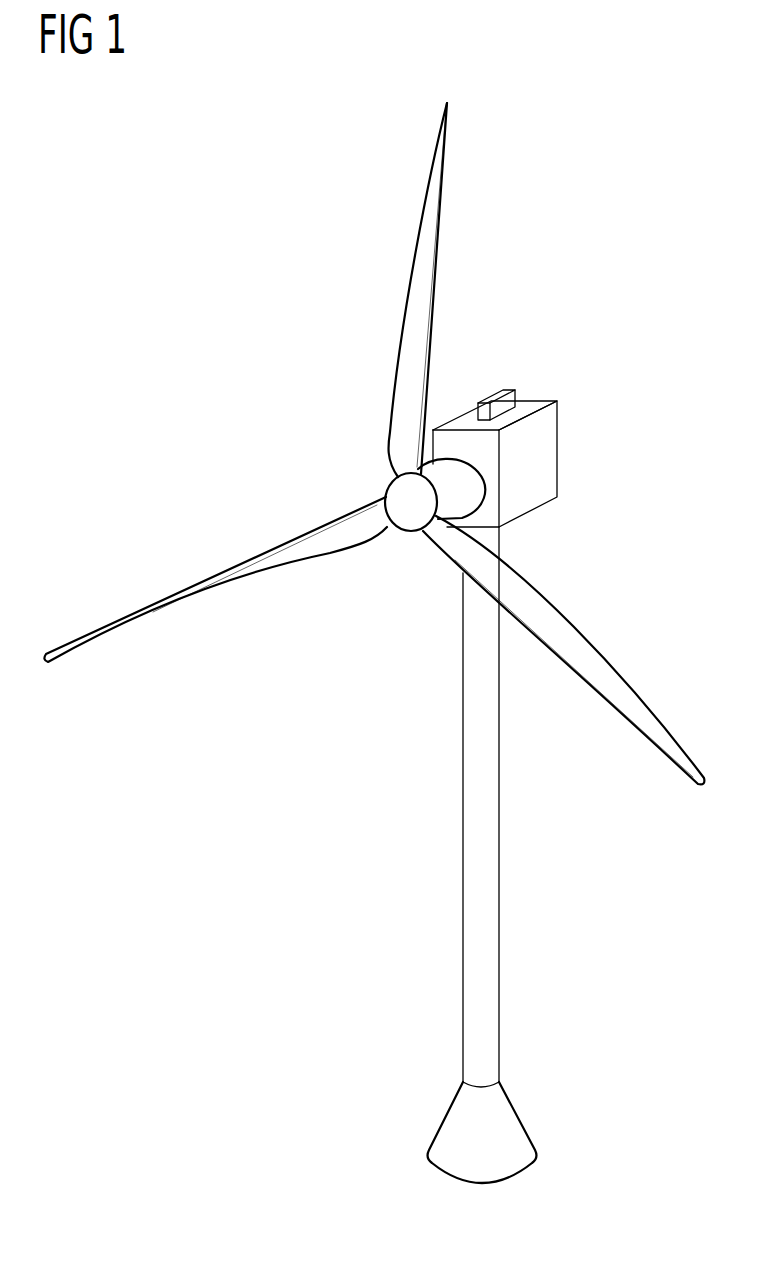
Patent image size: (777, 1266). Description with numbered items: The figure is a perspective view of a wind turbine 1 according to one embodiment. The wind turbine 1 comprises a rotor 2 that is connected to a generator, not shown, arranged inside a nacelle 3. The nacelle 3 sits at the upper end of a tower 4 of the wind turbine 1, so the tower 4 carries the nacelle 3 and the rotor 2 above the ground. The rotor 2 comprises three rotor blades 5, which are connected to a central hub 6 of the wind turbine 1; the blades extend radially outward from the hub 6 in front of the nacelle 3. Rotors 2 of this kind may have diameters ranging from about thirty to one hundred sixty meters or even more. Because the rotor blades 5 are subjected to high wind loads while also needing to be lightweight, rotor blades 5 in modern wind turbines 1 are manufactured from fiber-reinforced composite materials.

The wind turbine 1 is at (118, 306).
The rotor 2 is at (212, 558).
The nacelle 3 is at (542, 438).
The tower 4 is at (487, 962).
The rotor blade 5 is at (420, 300).
The hub 6 is at (467, 488).